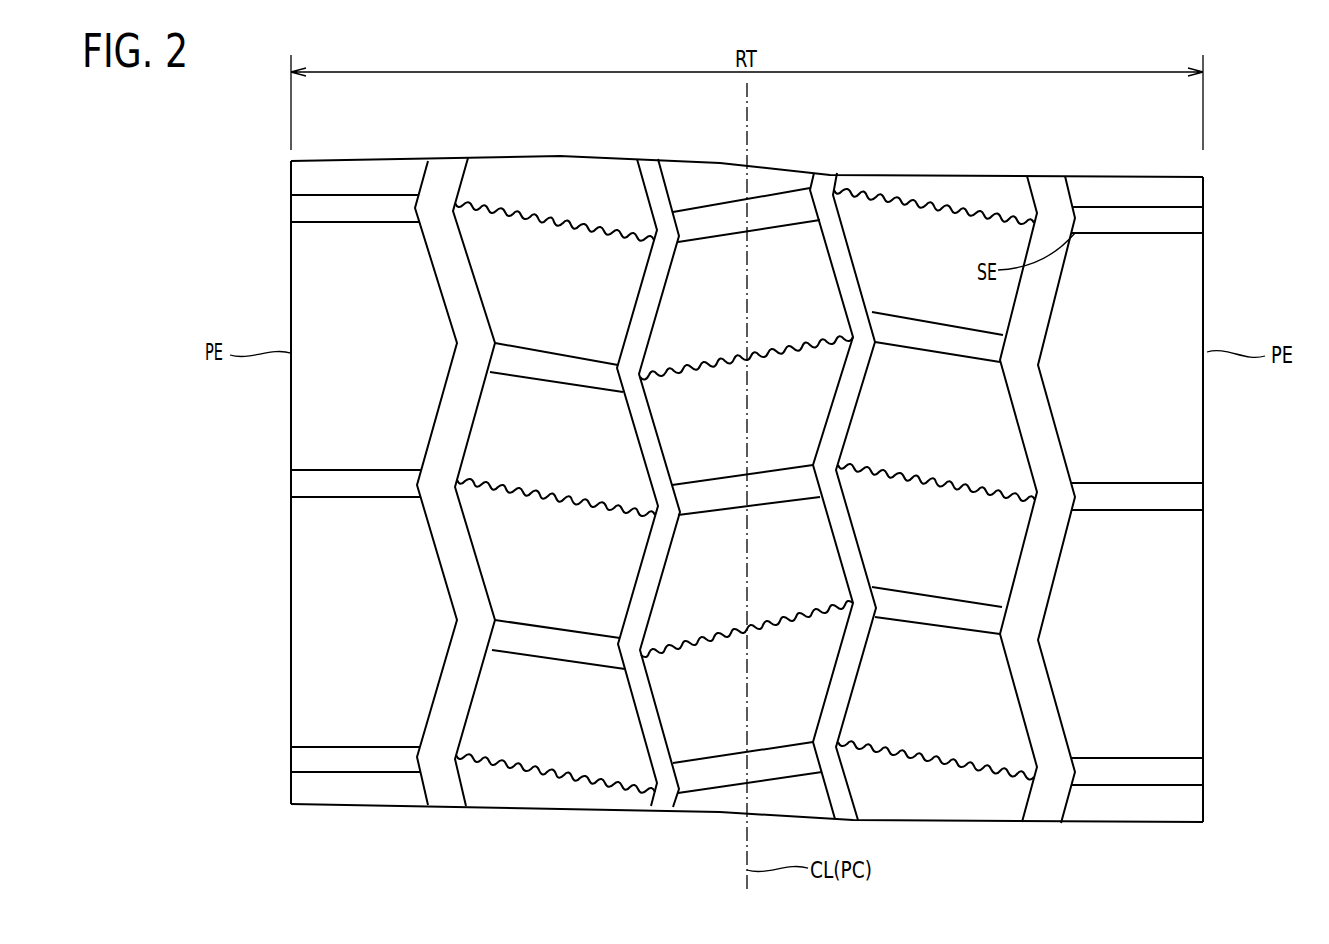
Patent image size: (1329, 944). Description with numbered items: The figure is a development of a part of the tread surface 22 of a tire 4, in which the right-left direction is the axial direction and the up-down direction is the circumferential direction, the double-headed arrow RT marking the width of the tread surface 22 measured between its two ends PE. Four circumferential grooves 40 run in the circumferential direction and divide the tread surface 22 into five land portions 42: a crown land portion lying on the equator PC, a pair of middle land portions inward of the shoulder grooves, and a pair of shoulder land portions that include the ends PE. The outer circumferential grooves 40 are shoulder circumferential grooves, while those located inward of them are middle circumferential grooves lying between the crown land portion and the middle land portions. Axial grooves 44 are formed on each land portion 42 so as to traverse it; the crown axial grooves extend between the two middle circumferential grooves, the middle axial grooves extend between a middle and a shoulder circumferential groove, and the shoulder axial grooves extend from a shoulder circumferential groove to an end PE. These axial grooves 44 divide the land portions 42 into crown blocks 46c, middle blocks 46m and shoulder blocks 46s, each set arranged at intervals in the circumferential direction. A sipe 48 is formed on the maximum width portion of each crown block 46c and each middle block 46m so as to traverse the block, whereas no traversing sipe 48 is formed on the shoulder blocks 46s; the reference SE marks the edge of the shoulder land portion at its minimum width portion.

The tire 4 is at (748, 485).
The tread surface 22 is at (1234, 203).
The circumferential grooves 40 is at (1047, 200).
The land portions 42 is at (1130, 192).
The axial grooves 44 is at (313, 762).
The shoulder blocks 46s is at (313, 585).
The middle blocks 46m is at (488, 550).
The crown blocks 46c is at (823, 538).
The sipe 48 is at (553, 223).